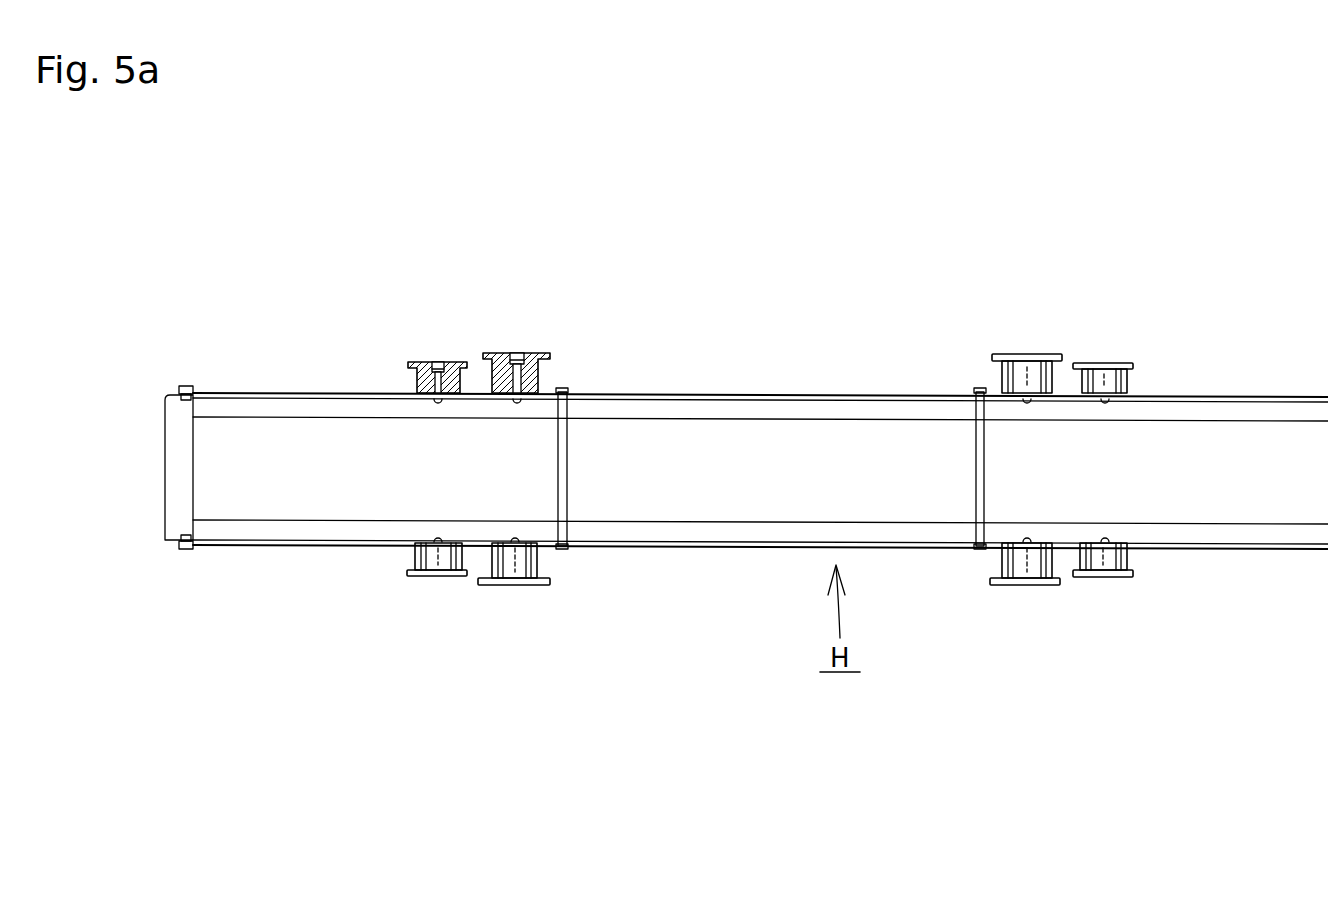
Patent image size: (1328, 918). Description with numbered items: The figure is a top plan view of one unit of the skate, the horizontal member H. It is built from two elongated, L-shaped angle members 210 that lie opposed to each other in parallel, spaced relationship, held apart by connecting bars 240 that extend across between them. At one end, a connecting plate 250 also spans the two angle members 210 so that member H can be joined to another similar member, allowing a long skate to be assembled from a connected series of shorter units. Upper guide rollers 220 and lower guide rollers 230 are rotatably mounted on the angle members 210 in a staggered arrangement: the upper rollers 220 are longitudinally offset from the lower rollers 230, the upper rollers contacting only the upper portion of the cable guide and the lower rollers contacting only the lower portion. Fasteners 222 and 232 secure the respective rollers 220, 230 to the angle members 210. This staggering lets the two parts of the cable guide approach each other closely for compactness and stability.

The L-shaped angle member 210 is at (783, 405).
The upper guide roller 220 is at (538, 377).
The bolt of tall boss 222 is at (543, 352).
The lower guide roller 230 is at (415, 383).
The bolt of short boss 232 is at (465, 363).
The connecting bar 240 is at (567, 474).
The connecting plate 250 is at (173, 480).